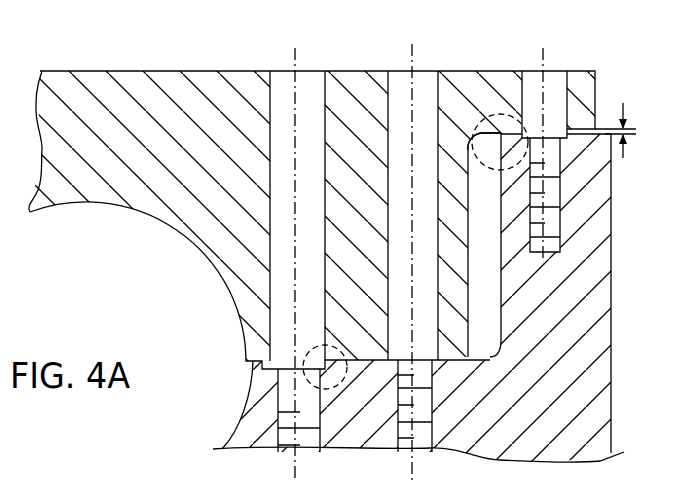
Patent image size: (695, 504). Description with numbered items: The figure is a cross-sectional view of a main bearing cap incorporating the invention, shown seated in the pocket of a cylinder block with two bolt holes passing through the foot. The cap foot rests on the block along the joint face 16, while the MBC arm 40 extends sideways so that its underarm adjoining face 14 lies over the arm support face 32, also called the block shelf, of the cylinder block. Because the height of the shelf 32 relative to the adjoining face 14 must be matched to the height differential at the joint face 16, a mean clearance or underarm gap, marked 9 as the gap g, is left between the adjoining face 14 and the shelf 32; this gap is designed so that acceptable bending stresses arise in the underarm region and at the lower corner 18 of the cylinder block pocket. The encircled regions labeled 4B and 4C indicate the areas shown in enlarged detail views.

The MBC arm 40 is at (575, 70).
The arm support face 32 is at (601, 132).
The gap dimension 9 is at (617, 119).
The adjoining face 14 is at (492, 138).
The lower corner 18 is at (500, 343).
The joint face 16 is at (378, 368).
The detail area for FIG. 4B is at (327, 347).
The detail area for FIG. 4C is at (513, 114).